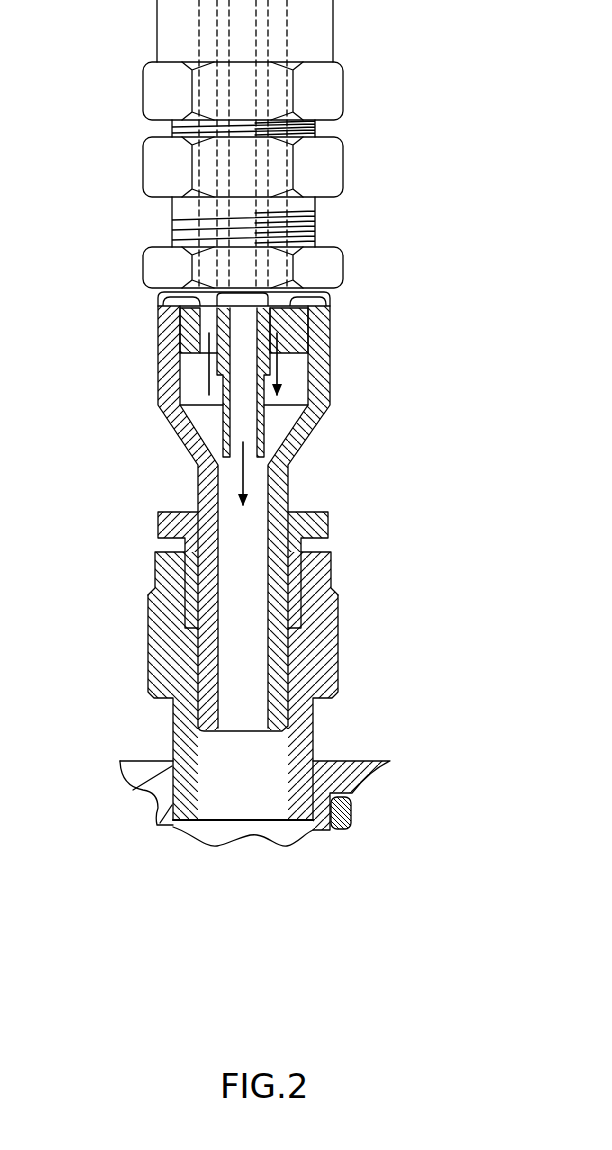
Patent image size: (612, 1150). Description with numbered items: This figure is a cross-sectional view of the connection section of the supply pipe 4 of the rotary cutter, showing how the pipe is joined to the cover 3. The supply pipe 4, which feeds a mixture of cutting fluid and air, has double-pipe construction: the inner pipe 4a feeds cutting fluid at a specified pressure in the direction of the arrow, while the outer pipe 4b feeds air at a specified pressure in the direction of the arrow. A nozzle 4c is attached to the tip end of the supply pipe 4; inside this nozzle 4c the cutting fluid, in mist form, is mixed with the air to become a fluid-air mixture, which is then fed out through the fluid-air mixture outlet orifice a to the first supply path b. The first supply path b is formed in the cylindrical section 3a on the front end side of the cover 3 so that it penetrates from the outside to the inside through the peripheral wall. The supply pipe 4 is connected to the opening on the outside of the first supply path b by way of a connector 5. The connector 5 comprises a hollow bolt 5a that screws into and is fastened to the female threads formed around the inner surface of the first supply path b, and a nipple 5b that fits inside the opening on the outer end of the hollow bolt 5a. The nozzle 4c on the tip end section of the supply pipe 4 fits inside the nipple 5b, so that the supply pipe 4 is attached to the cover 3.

The supply pipe 4 is at (382, 162).
The inner pipe 4a is at (247, 423).
The outer pipe 4b is at (280, 322).
The nozzle 4c is at (178, 432).
The connector 5 is at (337, 650).
The hollow bolt 5a is at (318, 593).
The nipple 5b is at (317, 520).
The cover 3 is at (146, 758).
The cylindrical section 3a is at (142, 782).
The fluid-air mixture outlet orifice a is at (227, 692).
The first supply path b is at (275, 827).